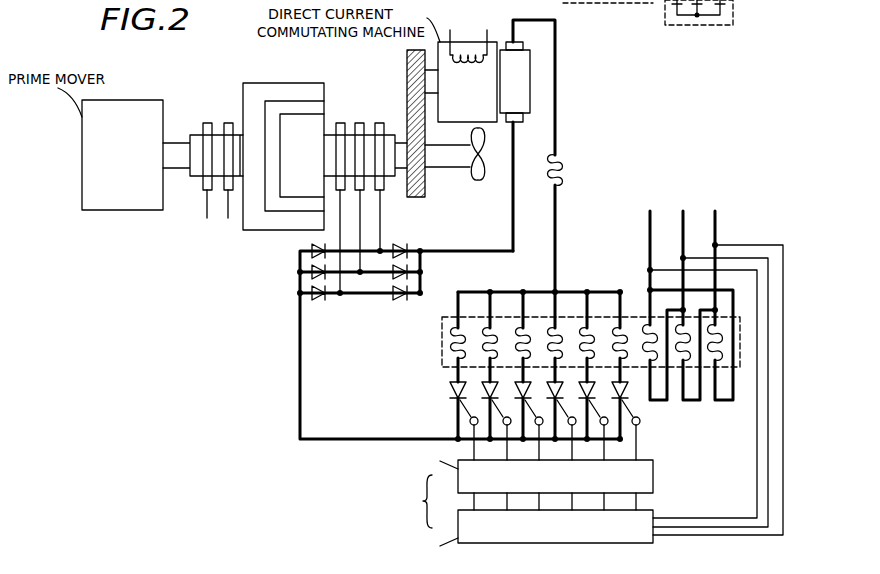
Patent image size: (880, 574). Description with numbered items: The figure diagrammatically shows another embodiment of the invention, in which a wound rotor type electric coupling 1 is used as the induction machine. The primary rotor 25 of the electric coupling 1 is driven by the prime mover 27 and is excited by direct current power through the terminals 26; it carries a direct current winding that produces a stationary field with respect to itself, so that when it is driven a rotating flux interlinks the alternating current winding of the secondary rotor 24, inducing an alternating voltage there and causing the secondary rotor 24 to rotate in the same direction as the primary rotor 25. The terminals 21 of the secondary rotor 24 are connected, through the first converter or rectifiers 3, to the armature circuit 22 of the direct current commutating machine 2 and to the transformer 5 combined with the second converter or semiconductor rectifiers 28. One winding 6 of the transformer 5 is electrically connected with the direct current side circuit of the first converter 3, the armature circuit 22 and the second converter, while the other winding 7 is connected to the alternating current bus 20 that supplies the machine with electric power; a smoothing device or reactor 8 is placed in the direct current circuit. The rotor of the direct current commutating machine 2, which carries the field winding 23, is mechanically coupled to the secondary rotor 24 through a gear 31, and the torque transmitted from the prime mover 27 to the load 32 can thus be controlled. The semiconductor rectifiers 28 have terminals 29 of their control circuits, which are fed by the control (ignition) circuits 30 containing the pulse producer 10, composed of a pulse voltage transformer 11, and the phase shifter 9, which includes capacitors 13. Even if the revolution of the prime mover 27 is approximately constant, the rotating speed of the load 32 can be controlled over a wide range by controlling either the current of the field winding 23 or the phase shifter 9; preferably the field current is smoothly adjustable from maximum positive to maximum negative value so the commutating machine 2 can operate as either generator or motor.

The wound rotor type electric coupling 1 is at (365, 121).
The direct current commutating machine 2 is at (467, 82).
The first converter 3 is at (405, 341).
The transformer 5 is at (636, 316).
The winding 6 is at (442, 345).
The other winding 7 is at (715, 361).
The smoothing device 8 is at (561, 170).
The phase shifter 9 is at (488, 533).
The pulse producer 10 is at (482, 482).
The pulse voltage transformer 11 is at (619, 5).
The capacitors 13 is at (692, 16).
The alternating current bus 20 is at (651, 228).
The terminals 21 is at (381, 121).
The armature circuit 22 is at (527, 135).
The field winding 23 is at (459, 49).
The secondary rotor 24 is at (302, 155).
The primary rotor 25 is at (273, 84).
The terminals 26 is at (228, 195).
The prime mover 27 is at (122, 155).
The semiconductor rectifiers 28 is at (447, 385).
The terminals of control circuits 29 is at (641, 424).
The control (ignition) circuits 30 is at (259, 501).
The gear 31 is at (418, 198).
The load 32 is at (466, 181).